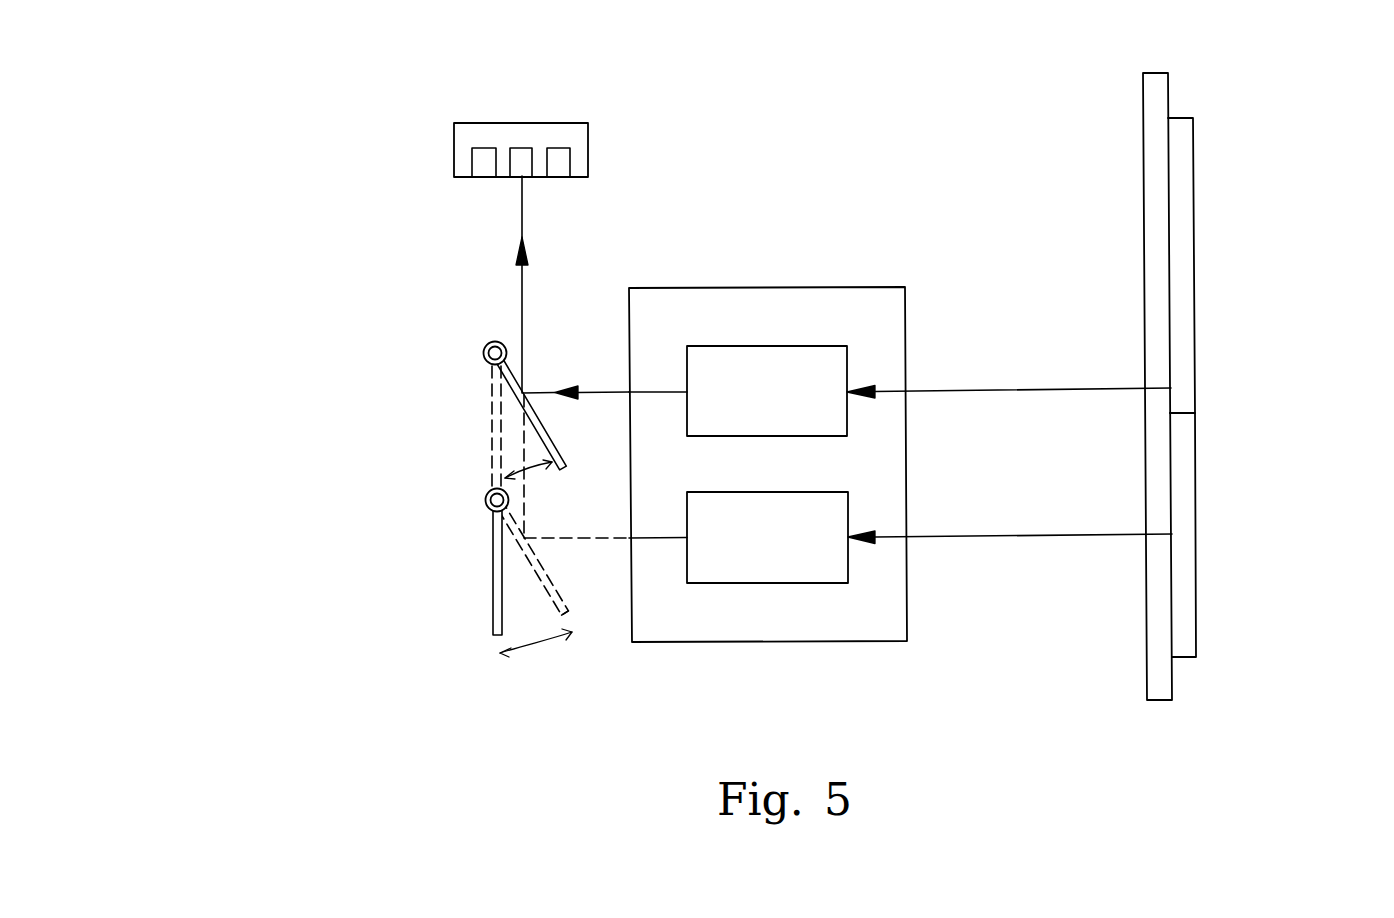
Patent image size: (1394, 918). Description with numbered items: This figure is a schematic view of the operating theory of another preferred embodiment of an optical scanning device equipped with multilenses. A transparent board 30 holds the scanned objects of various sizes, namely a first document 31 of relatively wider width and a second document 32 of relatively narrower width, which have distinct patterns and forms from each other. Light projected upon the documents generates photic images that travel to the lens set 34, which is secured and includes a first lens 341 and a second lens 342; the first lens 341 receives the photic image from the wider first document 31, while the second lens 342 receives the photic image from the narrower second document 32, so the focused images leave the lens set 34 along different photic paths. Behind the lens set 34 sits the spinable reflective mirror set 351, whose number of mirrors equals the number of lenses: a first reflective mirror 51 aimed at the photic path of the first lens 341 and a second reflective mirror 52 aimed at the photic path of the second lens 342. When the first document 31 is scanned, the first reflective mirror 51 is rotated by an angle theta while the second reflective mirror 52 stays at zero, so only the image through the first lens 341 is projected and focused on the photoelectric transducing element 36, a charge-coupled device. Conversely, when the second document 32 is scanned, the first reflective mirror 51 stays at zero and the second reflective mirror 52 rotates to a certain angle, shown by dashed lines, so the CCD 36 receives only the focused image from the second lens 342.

The board 30 is at (1168, 83).
The first document 31 is at (1178, 118).
The second document 32 is at (1180, 412).
The lens set 34 is at (820, 412).
The first lens 341 is at (847, 358).
The second lens 342 is at (848, 565).
The photoelectric transducing element 36 is at (588, 141).
The reflective mirror set 351 is at (380, 450).
The first reflective mirror 51 is at (486, 348).
The second reflective mirror 52 is at (486, 502).